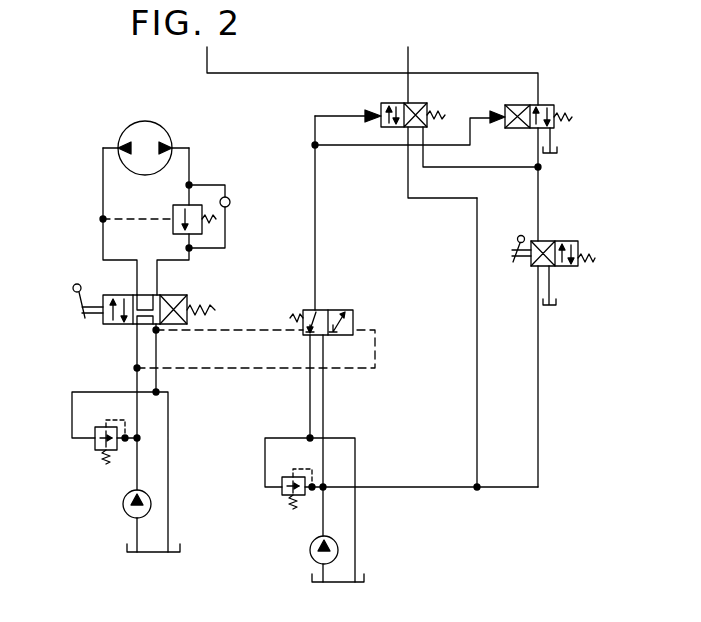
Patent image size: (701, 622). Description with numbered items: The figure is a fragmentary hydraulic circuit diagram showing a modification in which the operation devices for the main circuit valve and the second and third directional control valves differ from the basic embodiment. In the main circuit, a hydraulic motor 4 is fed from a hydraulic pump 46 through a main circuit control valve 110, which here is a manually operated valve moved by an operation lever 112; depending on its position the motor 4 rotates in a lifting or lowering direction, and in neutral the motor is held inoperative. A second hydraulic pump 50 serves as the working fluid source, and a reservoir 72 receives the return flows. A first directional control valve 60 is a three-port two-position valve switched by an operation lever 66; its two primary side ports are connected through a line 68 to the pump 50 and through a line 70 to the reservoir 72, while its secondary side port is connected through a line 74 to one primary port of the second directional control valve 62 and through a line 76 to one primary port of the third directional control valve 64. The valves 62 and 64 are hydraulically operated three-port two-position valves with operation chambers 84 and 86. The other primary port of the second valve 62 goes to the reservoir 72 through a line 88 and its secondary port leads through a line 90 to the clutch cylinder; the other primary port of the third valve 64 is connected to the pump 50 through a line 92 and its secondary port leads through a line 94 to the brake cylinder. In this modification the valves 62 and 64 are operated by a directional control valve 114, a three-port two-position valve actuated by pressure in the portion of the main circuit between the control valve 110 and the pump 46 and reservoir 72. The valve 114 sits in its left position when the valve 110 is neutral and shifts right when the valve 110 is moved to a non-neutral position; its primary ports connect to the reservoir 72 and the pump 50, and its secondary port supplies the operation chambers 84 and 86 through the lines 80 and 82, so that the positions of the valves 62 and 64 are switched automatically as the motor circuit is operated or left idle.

The hydraulic motor 4 is at (127, 126).
The hydraulic pump 46 is at (123, 504).
The hydraulic pump 50 is at (310, 550).
The first directional control valve 60 is at (568, 241).
The second directional control valve 62 is at (547, 105).
The third directional control valve 64 is at (415, 103).
The operation lever 66 is at (515, 250).
The line 68 is at (538, 391).
The line 70 is at (549, 284).
The reservoir 72 is at (155, 553).
The line 74 is at (537, 148).
The line 76 is at (482, 168).
The line 80 is at (338, 147).
The line 82 is at (330, 116).
The operation chamber 84 is at (503, 109).
The operation chamber 86 is at (373, 108).
The line 88 is at (560, 129).
The line 90 is at (490, 73).
The line 92 is at (477, 373).
The line 94 is at (408, 57).
The main circuit control valve 110 is at (120, 325).
The operation lever 112 is at (75, 285).
The directional control valve 114 is at (337, 310).